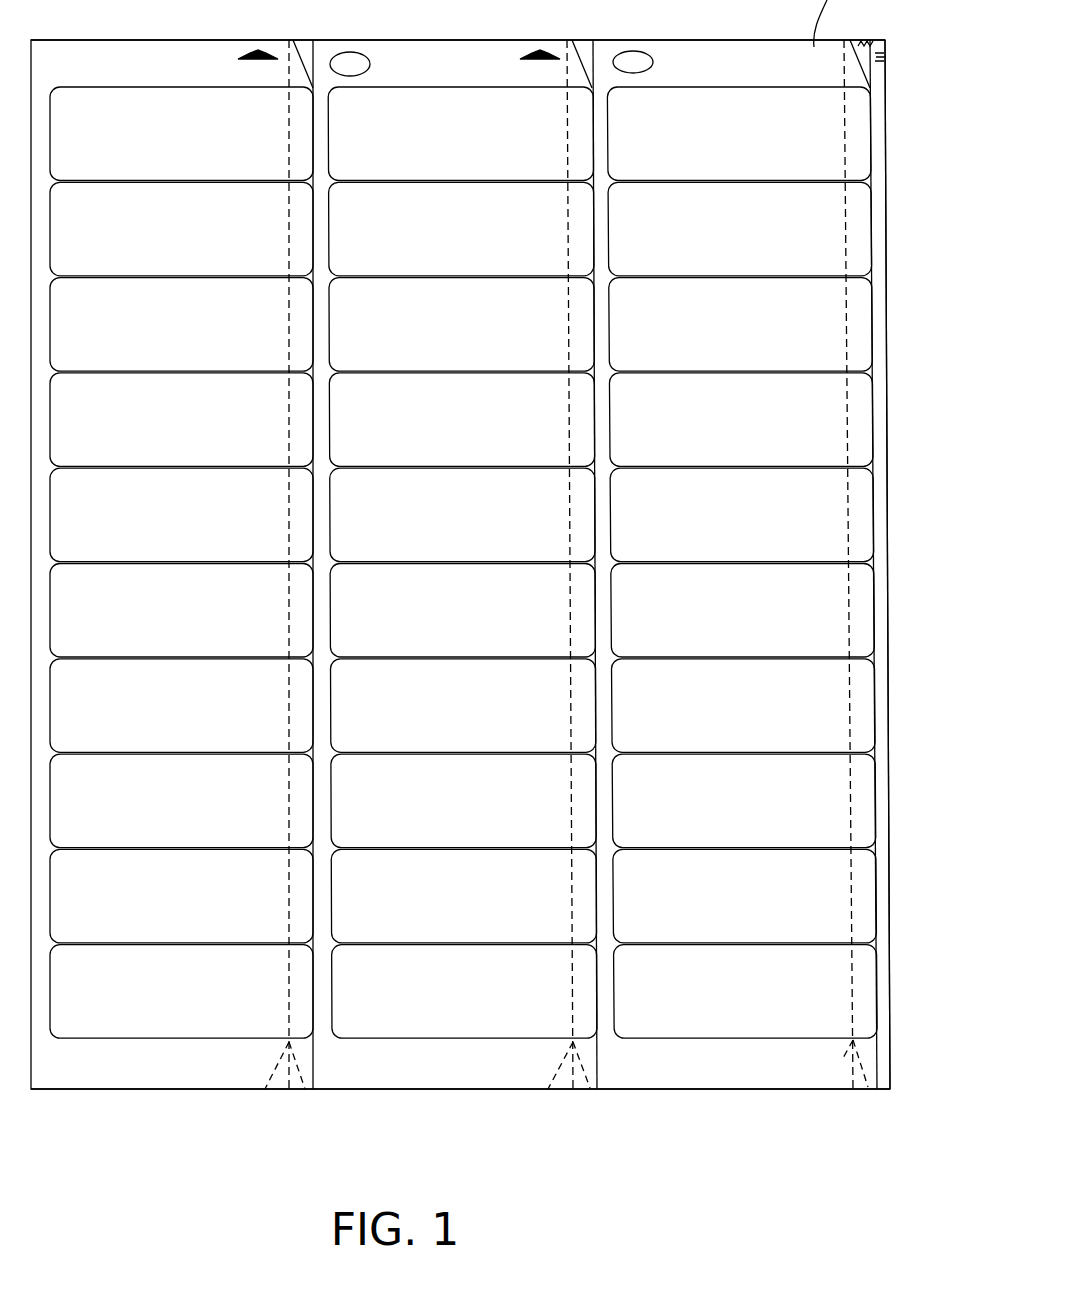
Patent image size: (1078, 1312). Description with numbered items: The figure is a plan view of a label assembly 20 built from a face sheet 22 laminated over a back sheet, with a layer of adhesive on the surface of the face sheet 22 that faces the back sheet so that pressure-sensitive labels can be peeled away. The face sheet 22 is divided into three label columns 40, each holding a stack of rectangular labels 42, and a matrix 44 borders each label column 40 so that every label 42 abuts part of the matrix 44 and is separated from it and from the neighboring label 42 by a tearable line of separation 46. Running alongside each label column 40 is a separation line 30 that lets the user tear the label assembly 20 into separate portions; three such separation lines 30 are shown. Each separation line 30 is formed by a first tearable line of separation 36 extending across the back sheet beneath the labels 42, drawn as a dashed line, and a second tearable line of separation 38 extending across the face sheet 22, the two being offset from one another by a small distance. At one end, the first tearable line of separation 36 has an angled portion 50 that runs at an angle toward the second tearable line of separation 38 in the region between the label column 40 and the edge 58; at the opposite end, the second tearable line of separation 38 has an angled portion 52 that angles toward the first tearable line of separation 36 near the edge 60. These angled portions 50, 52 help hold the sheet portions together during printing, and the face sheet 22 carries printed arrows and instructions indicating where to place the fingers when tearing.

The label assembly 20 is at (700, 1124).
The face sheet 22 is at (195, 1070).
The separation line 30 is at (307, 1103).
The first tearable line of separation 36 is at (290, 419).
The second tearable line of separation 38 is at (870, 252).
The label column 40 is at (133, 1050).
The label 42 is at (303, 317).
The matrix 44 is at (200, 52).
The tearable line of separation 46 is at (607, 317).
The angled portion 50 is at (827, 1043).
The angled portion 52 is at (303, 72).
The edge 58 is at (656, 1089).
The edge 60 is at (497, 40).